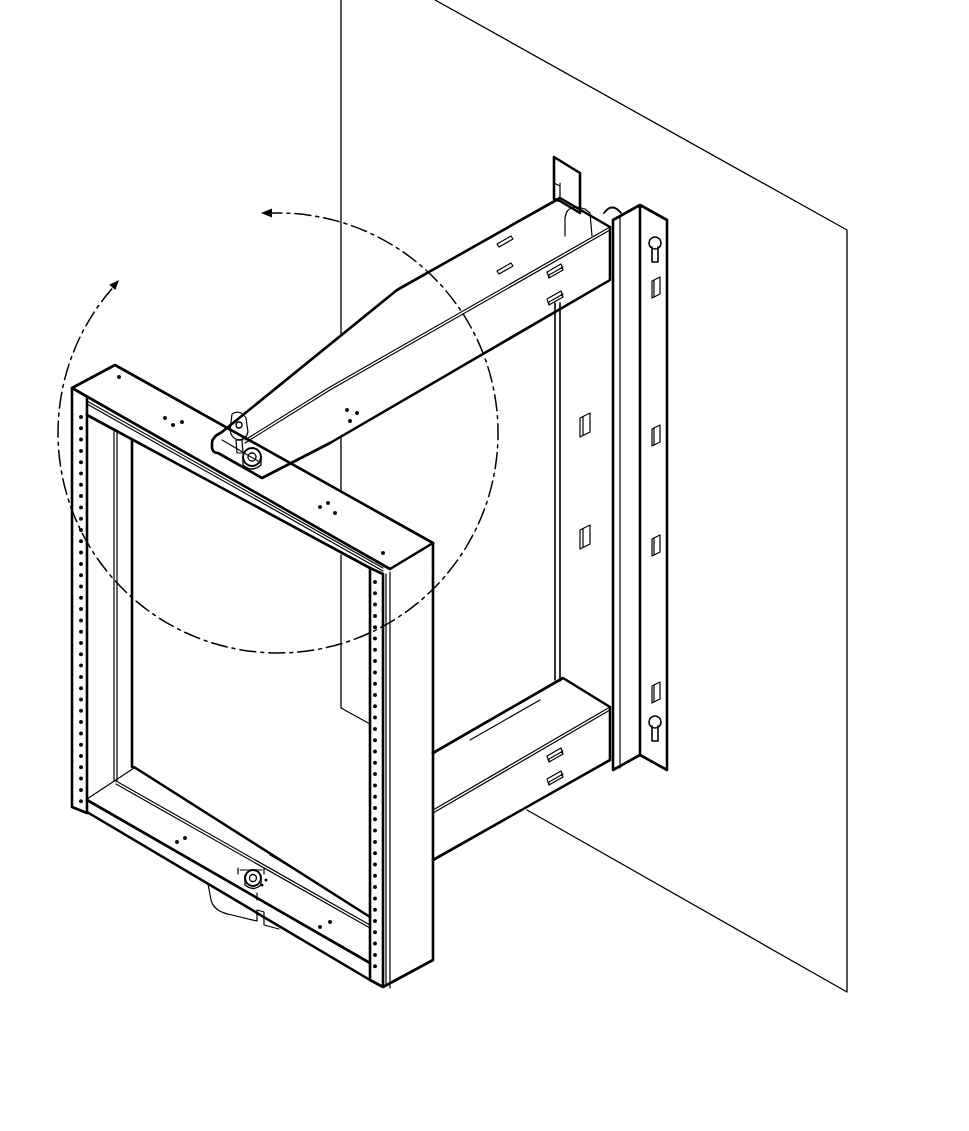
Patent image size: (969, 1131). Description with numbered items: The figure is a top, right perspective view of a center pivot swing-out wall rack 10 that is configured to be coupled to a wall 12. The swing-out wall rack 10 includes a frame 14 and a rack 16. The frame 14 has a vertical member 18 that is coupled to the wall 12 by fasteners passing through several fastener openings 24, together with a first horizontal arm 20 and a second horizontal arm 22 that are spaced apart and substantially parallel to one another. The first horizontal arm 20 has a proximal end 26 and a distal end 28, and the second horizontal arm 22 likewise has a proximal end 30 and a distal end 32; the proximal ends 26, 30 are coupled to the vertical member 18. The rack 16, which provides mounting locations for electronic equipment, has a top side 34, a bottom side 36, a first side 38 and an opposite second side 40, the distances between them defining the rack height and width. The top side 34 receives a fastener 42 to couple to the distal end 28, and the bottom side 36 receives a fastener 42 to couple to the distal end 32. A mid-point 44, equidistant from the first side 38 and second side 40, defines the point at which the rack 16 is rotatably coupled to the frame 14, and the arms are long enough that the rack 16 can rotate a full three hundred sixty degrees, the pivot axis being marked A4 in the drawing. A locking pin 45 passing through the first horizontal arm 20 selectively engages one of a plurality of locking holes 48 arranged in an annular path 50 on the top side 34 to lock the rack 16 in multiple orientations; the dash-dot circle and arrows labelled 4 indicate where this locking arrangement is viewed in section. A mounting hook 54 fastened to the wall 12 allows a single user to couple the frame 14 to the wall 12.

The swing-out wall rack 10 is at (212, 78).
The wall 12 is at (760, 460).
The frame 14 is at (529, 855).
The rack 16 is at (52, 778).
The vertical member 18 is at (659, 461).
The first horizontal arm 20 is at (393, 340).
The second horizontal arm 22 is at (465, 770).
The fastener openings 24 is at (662, 255).
The proximal end 26 is at (545, 253).
The distal end 28 is at (277, 412).
The proximal end 30 is at (540, 708).
The distal end 32 is at (285, 850).
The top side 34 is at (135, 397).
The bottom side 36 is at (157, 825).
The first side 38 is at (70, 595).
The second side 40 is at (413, 670).
The fastener 42 is at (252, 868).
The mid-point 44 is at (238, 477).
The locking pin 45 is at (247, 430).
The locking holes 48 is at (280, 887).
The annular path 50 is at (232, 867).
The mounting hook 54 is at (620, 196).
The pivot axis A4 is at (257, 893).
The section line 4- 4 is at (278, 427).